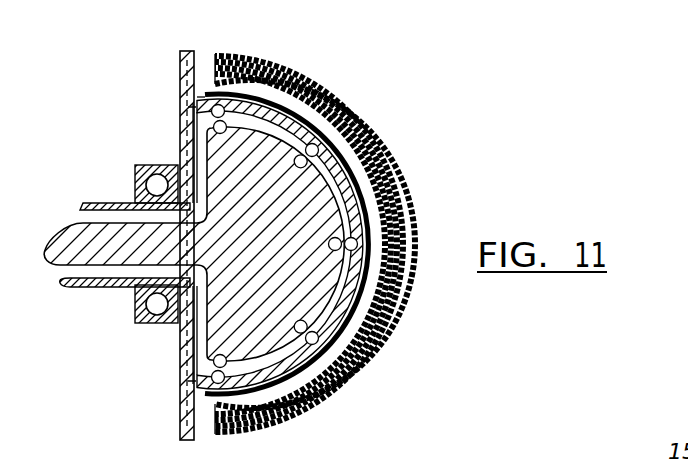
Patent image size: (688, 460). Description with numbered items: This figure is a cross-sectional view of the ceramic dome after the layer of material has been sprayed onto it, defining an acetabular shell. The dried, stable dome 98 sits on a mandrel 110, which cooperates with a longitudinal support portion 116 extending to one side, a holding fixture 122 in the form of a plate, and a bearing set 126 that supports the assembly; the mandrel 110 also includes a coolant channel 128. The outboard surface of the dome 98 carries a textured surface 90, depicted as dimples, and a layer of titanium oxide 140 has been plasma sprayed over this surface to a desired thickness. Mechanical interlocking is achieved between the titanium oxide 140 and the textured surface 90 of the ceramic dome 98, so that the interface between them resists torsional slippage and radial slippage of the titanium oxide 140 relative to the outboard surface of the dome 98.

The textured surface 90 is at (324, 93).
The stable dome 98 is at (262, 78).
The mandrel 110 is at (378, 243).
The longitudinal support portion 116 is at (107, 203).
The holding fixture 122 is at (183, 72).
The bearing set 126 is at (135, 168).
The coolant channel 128 is at (112, 270).
The titanium oxide 140 is at (363, 130).